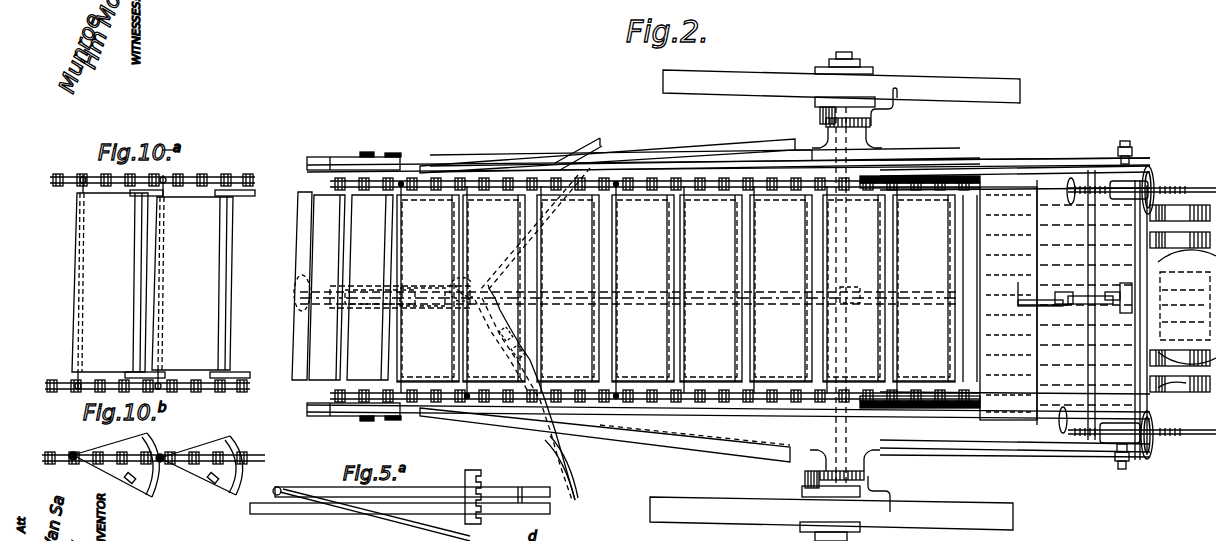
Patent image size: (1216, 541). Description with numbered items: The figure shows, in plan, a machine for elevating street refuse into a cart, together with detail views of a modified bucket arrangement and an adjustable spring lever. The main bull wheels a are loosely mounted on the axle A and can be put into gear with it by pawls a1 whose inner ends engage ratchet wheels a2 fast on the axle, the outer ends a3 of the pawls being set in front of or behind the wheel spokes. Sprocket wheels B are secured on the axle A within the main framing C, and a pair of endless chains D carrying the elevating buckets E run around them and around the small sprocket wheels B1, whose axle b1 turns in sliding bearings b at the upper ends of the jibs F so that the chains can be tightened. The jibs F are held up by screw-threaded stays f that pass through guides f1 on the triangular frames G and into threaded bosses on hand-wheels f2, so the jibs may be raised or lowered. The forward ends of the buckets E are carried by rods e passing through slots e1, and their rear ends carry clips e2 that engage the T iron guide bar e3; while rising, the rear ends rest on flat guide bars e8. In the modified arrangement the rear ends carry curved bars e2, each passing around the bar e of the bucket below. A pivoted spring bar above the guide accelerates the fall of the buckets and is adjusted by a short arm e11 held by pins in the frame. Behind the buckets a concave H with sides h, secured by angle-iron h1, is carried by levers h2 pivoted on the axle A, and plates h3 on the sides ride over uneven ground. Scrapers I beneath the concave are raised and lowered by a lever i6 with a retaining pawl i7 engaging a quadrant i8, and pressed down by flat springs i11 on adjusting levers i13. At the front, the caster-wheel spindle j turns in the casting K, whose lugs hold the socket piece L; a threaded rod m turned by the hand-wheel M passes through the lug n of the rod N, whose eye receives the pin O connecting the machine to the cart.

In FIG. 2, the main bull wheel a is at (835, 296).
In FIG. 2, the pawl a1 is at (820, 117).
In FIG. 2, the ratchet wheel a2 is at (870, 127).
In FIG. 2, the outer end of pawl a3 is at (898, 108).
In FIG. 2, the axle A is at (842, 340).
In FIG. 2, the sprocket wheel B is at (745, 188).
In FIG. 2, the small sprocket wheel B1 is at (333, 160).
In FIG. 2, the bearing b is at (365, 286).
In FIG. 2, the axle of small sprocket wheels b1 is at (390, 152).
In FIG. 2, the main framing C is at (635, 282).
In FIG. 2, the endless chain D is at (460, 180).
In FIG. 10a, the endless chain D is at (200, 178).
In FIG. 10b, the endless chain D is at (68, 462).
In FIG. 2, the elevating bucket E is at (370, 287).
In FIG. 10a, the elevating bucket E is at (152, 282).
In FIG. 10b, the elevating bucket E is at (112, 475).
In FIG. 2, the rod or bar e is at (403, 182).
In FIG. 10a, the rod or bar e is at (84, 178).
In FIG. 10b, the rod or bar e is at (121, 445).
In FIG. 10a, the slot e1 is at (78, 313).
In FIG. 10a, the clip e2 is at (165, 198).
In FIG. 10b, the clip e2 is at (157, 496).
In FIG. 2, the T iron guide bar e3 is at (540, 292).
In FIG. 2, the flat guide bar e8 is at (402, 205).
In FIG. 5a, the short arm e11 is at (330, 500).
In FIG. 2, the jib F is at (616, 303).
In FIG. 2, the stay f is at (447, 166).
In FIG. 2, the guide f1 is at (1122, 196).
In FIG. 2, the hand-wheel f2 is at (1150, 168).
In FIG. 2, the triangular frame G is at (1008, 160).
In FIG. 2, the curved plate or concave H is at (1063, 320).
In FIG. 2, the side of concave h is at (888, 176).
In FIG. 2, the angle-iron h1 is at (912, 183).
In FIG. 2, the lever h2 is at (1030, 170).
In FIG. 2, the plate h3 is at (955, 185).
In FIG. 2, the scraper I is at (1200, 250).
In FIG. 2, the lever i6 is at (1035, 306).
In FIG. 2, the retaining pawl i7 is at (1066, 292).
In FIG. 2, the quadrant i8 is at (1098, 296).
In FIG. 2, the flat spring i11 is at (1179, 401).
In FIG. 2, the adjusting lever i13 is at (1072, 178).
In FIG. 2, the spindle j is at (464, 278).
In FIG. 2, the casting K is at (514, 367).
In FIG. 2, the socket piece L is at (428, 288).
In FIG. 2, the hand-wheel M is at (312, 286).
In FIG. 2, the screw threaded rod m is at (370, 286).
In FIG. 2, the rod or bar N is at (341, 287).
In FIG. 2, the lug n is at (368, 312).
In FIG. 2, the pin O is at (298, 300).